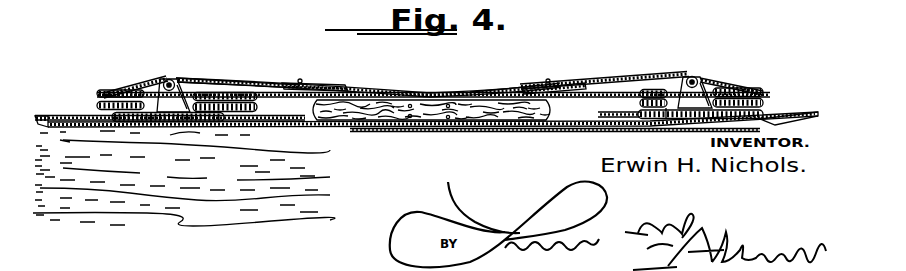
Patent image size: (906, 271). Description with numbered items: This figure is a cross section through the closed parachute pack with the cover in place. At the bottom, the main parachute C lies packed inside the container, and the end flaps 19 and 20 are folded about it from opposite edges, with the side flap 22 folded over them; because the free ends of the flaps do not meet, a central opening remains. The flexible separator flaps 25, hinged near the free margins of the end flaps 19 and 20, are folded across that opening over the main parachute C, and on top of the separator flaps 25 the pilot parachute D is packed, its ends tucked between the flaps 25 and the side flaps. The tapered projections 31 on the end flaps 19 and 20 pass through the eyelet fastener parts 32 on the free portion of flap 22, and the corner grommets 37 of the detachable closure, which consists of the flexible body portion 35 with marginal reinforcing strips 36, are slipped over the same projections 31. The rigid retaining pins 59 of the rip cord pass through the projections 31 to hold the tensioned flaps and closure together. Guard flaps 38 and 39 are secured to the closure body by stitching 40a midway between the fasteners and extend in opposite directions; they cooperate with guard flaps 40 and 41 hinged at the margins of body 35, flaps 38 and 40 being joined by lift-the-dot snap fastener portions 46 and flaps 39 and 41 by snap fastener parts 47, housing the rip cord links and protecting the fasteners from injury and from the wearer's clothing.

The end flap 19 is at (43, 112).
The end flap 20 is at (770, 115).
The side flap 22 is at (262, 113).
The separator flap 25 is at (278, 119).
The tapered projection 31 is at (150, 112).
The eyelet fastener part 32 is at (150, 112).
The body portion 35 is at (261, 93).
The marginal reinforcing strip 36 is at (216, 94).
The grommet 37 is at (190, 92).
The guard flap 38 is at (370, 96).
The guard flap 39 is at (494, 89).
The guard flap 40 is at (143, 80).
The stitching 40a is at (440, 88).
The guard flap 41 is at (666, 77).
The snap fastener portion 46 is at (312, 80).
The snap fastener part 47 is at (547, 79).
The retaining pin 59 is at (175, 78).
The main parachute C is at (205, 215).
The pilot parachute D is at (397, 106).